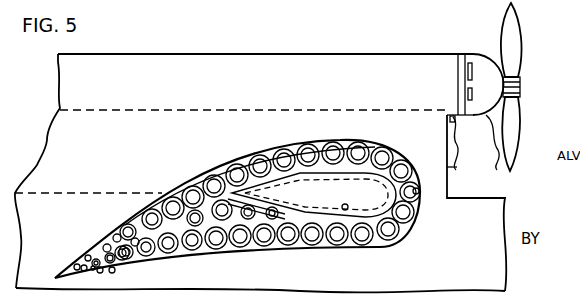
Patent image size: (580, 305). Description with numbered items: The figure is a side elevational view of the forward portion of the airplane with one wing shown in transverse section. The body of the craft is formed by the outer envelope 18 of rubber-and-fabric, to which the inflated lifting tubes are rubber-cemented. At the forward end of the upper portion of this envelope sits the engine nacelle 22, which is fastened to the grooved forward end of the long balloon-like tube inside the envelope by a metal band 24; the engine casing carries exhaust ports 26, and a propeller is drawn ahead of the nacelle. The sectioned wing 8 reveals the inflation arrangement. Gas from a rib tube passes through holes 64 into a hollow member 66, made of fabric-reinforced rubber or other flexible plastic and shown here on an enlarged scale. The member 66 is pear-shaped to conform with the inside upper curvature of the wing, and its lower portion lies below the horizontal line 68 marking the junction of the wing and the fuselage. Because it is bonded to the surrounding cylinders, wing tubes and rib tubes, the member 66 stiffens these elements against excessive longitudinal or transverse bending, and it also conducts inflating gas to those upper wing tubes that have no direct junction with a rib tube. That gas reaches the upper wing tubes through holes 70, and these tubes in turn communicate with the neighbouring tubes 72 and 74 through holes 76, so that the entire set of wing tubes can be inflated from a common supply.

The outer envelope 18 is at (247, 62).
The wing 8 is at (450, 131).
The engine nacelle 22 is at (484, 87).
The metal band 24 is at (457, 81).
The exhaust ports 26 is at (477, 43).
The horizontal line 68 is at (427, 198).
The tubes 72 is at (257, 152).
The tubes 74 is at (240, 155).
The holes 76 is at (222, 168).
The holes 70 is at (310, 177).
The holes 64 is at (343, 206).
The hollow members 66 is at (348, 206).